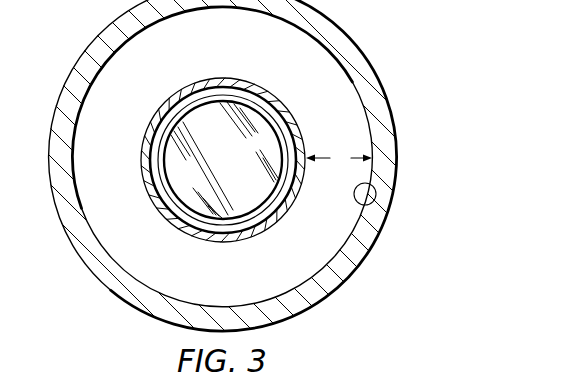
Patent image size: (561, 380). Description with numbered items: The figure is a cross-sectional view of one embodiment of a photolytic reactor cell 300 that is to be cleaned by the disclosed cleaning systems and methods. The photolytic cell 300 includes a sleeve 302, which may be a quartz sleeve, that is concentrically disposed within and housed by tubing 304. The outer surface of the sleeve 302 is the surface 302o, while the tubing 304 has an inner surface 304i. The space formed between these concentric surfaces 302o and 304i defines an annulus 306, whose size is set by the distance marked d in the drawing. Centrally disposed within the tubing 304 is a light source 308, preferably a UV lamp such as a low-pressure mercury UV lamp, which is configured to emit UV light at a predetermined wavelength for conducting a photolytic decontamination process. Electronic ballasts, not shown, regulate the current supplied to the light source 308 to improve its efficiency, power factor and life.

The photolytic reactor cell 300 is at (428, 138).
The sleeve 302 is at (249, 232).
The outer surface of sleeve 302o is at (301, 128).
The tubing 304 is at (388, 91).
The inner surface of tubing 304i is at (377, 196).
The annulus 306 is at (165, 259).
The light source 308 is at (190, 106).